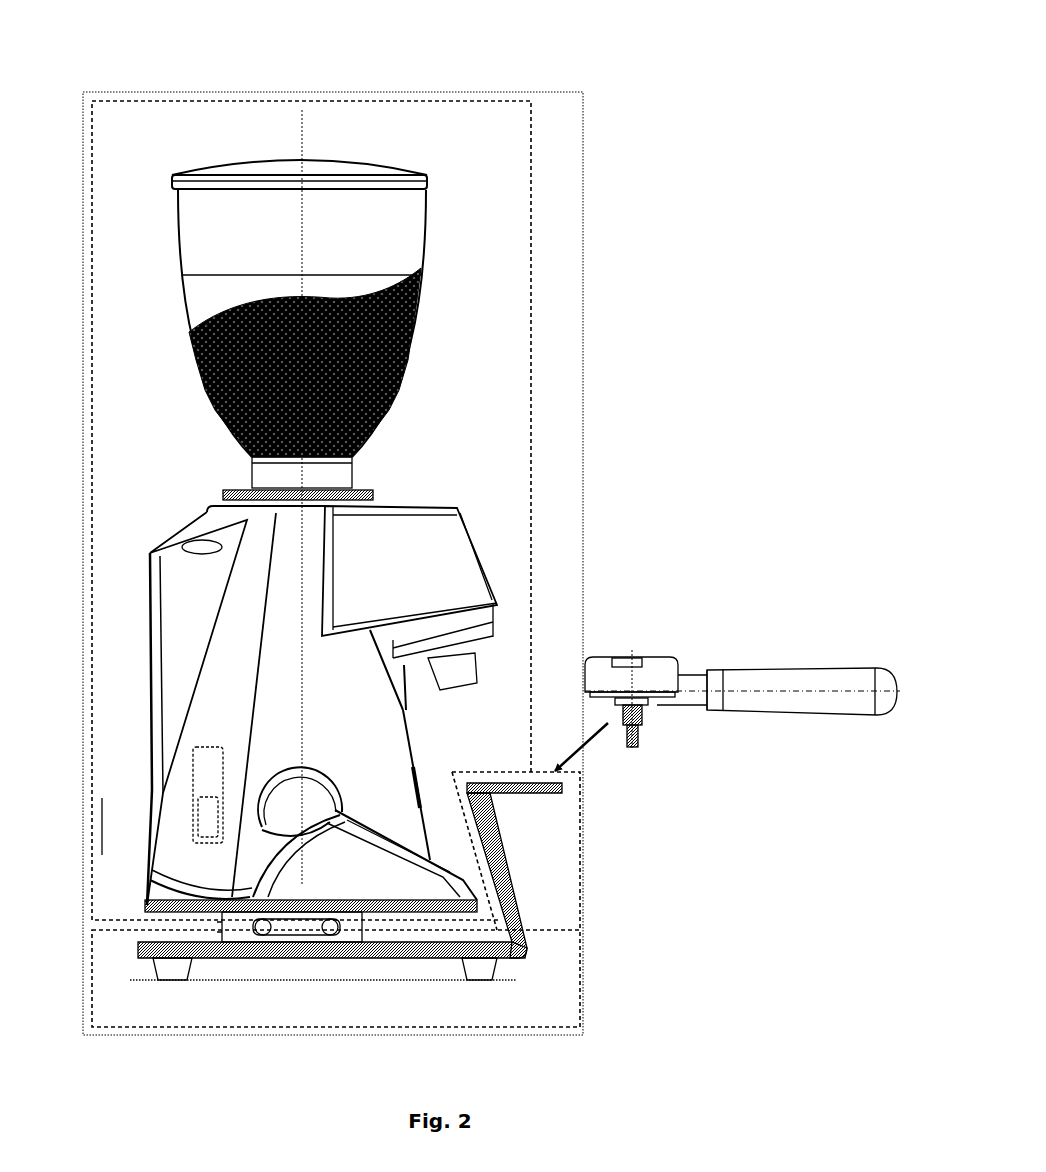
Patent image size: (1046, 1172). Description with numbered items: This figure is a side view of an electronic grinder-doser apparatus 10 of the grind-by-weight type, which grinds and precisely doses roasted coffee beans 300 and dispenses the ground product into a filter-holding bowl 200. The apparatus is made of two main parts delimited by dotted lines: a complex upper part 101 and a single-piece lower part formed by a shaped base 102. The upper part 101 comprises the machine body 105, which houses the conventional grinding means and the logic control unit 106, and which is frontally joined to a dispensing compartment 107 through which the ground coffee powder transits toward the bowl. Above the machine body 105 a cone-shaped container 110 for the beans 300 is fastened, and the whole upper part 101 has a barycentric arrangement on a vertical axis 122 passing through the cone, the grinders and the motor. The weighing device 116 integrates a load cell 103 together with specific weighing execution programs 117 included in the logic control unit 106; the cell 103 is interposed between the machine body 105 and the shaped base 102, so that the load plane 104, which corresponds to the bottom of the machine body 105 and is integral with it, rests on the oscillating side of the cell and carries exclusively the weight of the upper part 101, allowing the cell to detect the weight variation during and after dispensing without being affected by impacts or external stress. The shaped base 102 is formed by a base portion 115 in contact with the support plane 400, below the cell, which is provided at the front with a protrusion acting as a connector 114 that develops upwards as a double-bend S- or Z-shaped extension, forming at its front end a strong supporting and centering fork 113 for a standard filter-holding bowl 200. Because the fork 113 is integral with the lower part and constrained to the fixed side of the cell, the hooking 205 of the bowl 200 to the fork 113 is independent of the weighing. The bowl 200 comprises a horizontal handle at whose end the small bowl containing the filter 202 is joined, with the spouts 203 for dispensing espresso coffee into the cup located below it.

The electronic grinder-doser apparatus 10 is at (583, 92).
The upper part of the apparatus 101 is at (530, 317).
The shaped base 102 is at (575, 950).
The load cell 103 is at (213, 892).
The load plane 104 is at (147, 905).
The machine body 105 is at (228, 672).
The logic control unit 106 is at (203, 762).
The dispensing compartment 107 is at (448, 538).
The cone-shaped container 110 is at (205, 240).
The supporting and centering fork 113 is at (520, 793).
The connector 114 is at (512, 875).
The base portion 115 is at (518, 958).
The weighing device 116 is at (102, 825).
The specific weighing execution programs 117 is at (200, 828).
The vertical axis 122 is at (303, 138).
The filter-holding bowl 200 is at (737, 640).
The small bowl containing the filter 202 is at (642, 657).
The spouts 203 is at (642, 740).
The hooking to the fork in the lower part 205 is at (593, 743).
The roasted coffee beans 300 is at (197, 362).
The support plane 400 is at (350, 982).